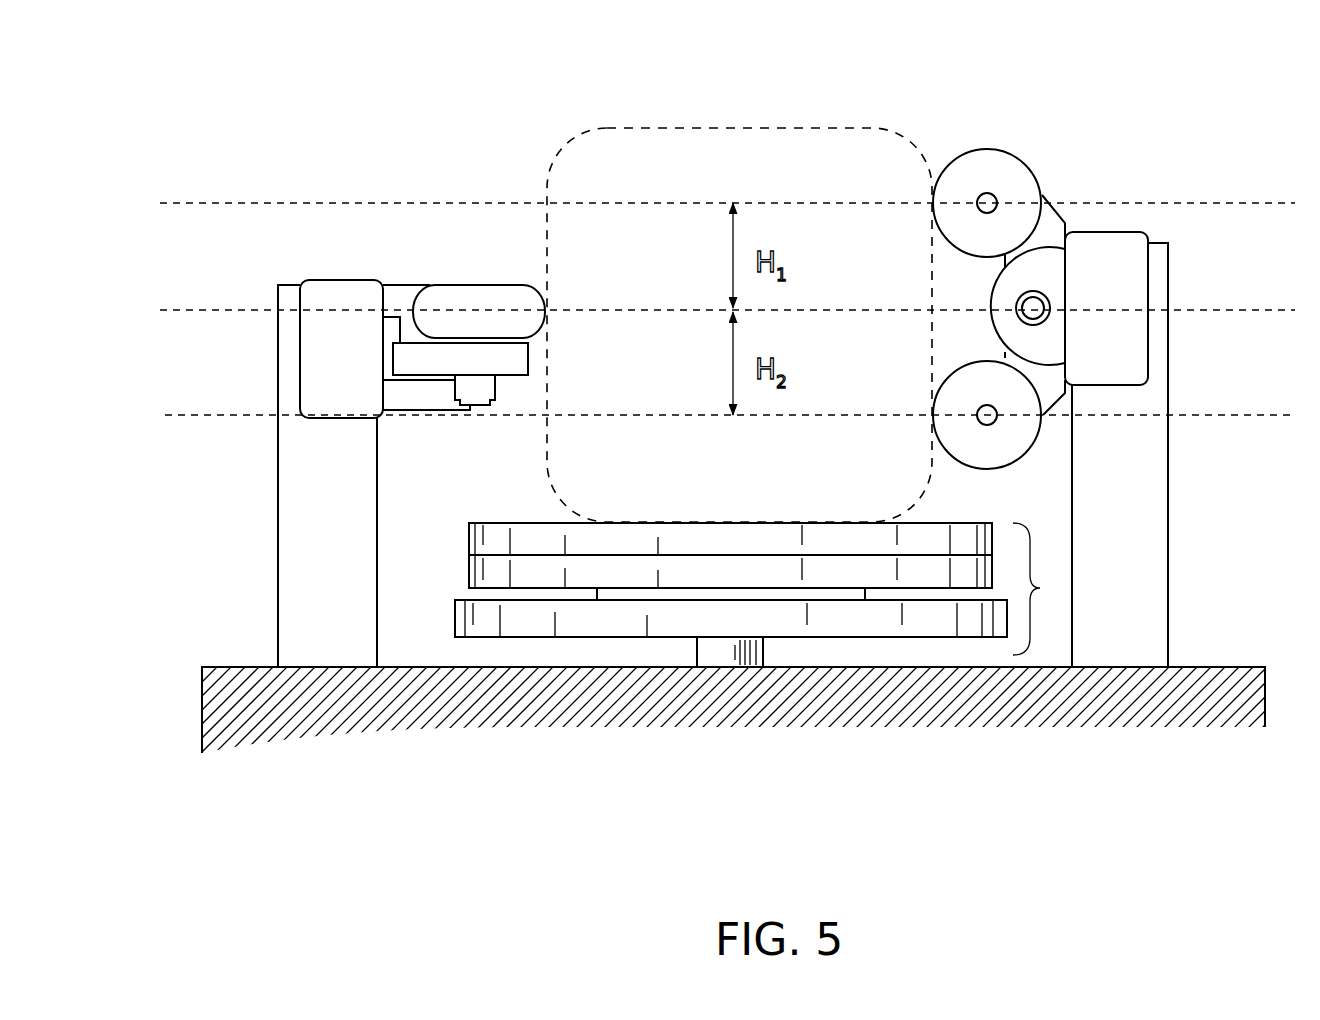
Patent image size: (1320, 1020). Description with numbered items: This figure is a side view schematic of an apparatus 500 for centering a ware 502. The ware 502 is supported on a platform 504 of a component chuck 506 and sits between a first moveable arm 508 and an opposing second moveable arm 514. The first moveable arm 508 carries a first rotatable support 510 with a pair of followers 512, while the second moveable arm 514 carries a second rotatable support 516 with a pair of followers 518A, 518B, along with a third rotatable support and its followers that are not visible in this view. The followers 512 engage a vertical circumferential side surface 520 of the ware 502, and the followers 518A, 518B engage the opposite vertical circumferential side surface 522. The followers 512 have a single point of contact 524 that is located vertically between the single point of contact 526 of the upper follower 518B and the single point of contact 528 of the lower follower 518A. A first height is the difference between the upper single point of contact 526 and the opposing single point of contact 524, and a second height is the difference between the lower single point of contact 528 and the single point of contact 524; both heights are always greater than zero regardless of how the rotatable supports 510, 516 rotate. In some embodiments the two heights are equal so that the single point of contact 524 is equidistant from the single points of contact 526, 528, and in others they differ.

The apparatus 500 is at (393, 92).
The ware 502 is at (707, 118).
The platform 504 is at (450, 539).
The component chuck 506 is at (1055, 589).
The first moveable arm 508 is at (300, 628).
The first rotatable support 510 is at (417, 358).
The followers 512 is at (445, 297).
The second moveable arm 514 is at (1145, 621).
The second rotatable support 516 is at (1050, 228).
The follower 518A is at (1007, 447).
The follower 518B is at (993, 168).
The vertical circumferential side surface 520 is at (535, 448).
The opposite vertical circumferential side surface 522 is at (938, 267).
The single point of contact 524 is at (557, 302).
The single point of contact 526 is at (923, 198).
The single point of contact 528 is at (922, 420).